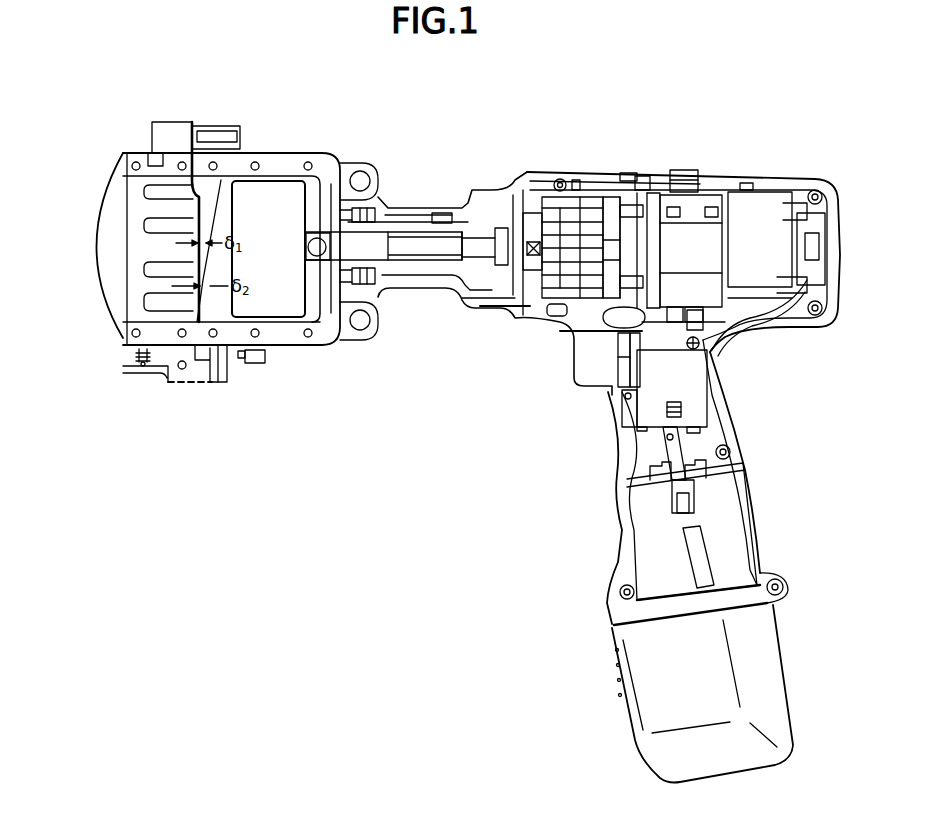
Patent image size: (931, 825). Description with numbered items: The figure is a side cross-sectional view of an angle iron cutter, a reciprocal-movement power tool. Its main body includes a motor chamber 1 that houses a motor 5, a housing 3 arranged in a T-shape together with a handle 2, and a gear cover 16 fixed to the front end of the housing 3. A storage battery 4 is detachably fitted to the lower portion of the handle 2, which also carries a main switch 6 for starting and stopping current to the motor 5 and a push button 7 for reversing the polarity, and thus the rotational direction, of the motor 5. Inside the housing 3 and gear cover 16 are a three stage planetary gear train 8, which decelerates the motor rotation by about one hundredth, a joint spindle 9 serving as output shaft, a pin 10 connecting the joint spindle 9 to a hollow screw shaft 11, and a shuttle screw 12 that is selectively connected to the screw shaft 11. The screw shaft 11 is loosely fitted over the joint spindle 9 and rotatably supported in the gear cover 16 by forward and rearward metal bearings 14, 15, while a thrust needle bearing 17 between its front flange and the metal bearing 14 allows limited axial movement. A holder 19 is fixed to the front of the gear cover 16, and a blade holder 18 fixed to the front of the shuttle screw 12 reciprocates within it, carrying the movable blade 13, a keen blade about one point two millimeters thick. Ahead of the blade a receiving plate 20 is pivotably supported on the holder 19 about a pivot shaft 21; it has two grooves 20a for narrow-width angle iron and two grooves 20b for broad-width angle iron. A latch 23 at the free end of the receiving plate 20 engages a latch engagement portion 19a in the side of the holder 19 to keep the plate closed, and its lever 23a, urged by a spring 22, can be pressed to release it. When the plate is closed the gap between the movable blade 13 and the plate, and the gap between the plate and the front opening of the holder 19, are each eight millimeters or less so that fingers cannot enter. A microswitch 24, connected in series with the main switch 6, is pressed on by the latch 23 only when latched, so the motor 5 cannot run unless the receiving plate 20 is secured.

The motor chamber 1 is at (743, 178).
The handle 2 is at (742, 420).
The housing 3 is at (690, 170).
The storage battery 4 is at (740, 555).
The motor 5 is at (760, 210).
The main switch 6 is at (650, 400).
The push button 7 is at (605, 325).
The three stage planetary gear train 8 is at (560, 277).
The joint spindle 9 is at (518, 245).
The pin 10 is at (507, 270).
The screw shaft 11 is at (463, 200).
The shuttle screw 12 is at (375, 250).
The movable blade 13 is at (273, 197).
The metal bearing 14 is at (375, 220).
The metal bearing 15 is at (438, 216).
The gear cover 16 is at (465, 295).
The thrust needle bearing 17 is at (375, 307).
The blade holder 18 is at (325, 316).
The holder 19 is at (292, 338).
The latch engagement portion 19a is at (197, 380).
The receiving plate 20 is at (112, 196).
The grooves 20a is at (147, 224).
The grooves 20b is at (155, 192).
The pivot shaft 21 is at (181, 135).
The spring 22 is at (132, 358).
The latch 23 is at (217, 368).
The lever 23a is at (137, 370).
The microswitch 24 is at (253, 362).